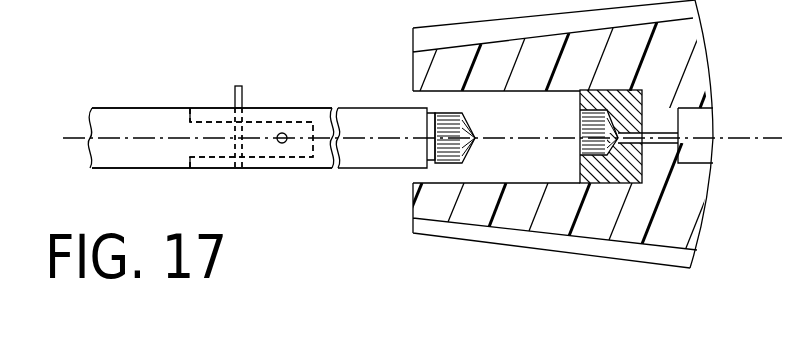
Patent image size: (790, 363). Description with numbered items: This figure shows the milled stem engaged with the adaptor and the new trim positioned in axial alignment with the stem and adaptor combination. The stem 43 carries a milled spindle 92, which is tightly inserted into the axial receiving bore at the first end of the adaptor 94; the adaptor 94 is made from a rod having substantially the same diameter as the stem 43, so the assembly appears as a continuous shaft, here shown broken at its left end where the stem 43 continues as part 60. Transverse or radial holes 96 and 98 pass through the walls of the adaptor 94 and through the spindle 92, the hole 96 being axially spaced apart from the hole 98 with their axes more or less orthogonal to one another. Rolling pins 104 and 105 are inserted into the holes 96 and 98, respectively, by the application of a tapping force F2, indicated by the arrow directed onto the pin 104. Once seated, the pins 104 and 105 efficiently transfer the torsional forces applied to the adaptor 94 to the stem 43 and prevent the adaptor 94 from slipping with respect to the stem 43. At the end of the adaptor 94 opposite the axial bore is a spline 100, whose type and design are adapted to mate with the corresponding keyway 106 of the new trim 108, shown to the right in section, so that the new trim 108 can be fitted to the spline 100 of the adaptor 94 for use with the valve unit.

The tube 60 is at (80, 138).
The stem 43 is at (162, 108).
The milled spindle 92 is at (208, 122).
The tapping force F2 is at (240, 70).
The rolling pin 104 is at (244, 94).
The transverse hole 98 is at (288, 133).
The adaptor 94 is at (362, 108).
The transverse hole 96 is at (238, 168).
The rolling pin 105 is at (283, 143).
The spline 100 is at (445, 163).
The keyway 106 is at (585, 153).
The new trim 108 is at (707, 58).